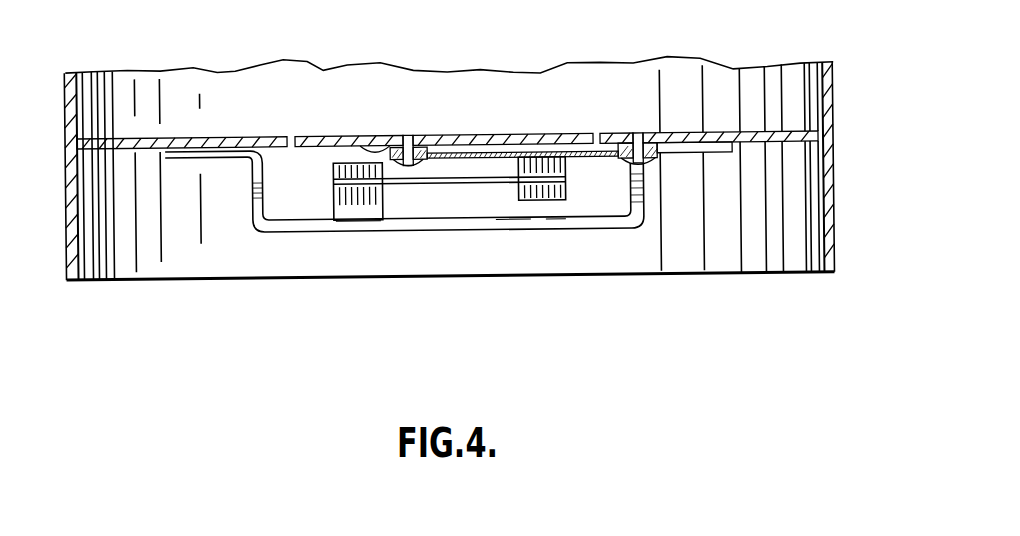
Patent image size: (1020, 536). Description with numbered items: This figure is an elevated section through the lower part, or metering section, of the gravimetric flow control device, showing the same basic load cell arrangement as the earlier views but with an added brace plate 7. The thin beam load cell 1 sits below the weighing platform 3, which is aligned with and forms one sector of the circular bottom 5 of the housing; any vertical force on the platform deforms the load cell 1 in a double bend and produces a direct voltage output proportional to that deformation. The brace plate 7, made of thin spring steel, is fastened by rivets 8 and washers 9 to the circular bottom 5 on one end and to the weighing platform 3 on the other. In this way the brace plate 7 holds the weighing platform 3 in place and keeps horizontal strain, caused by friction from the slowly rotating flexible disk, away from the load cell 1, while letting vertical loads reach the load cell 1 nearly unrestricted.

The thin beam load cell 1 is at (450, 235).
The weighing platform 3 is at (447, 87).
The circular bottom 5 is at (474, 166).
The brace plate 7 is at (528, 230).
The rivets 8 is at (537, 168).
The washers 9 is at (518, 169).